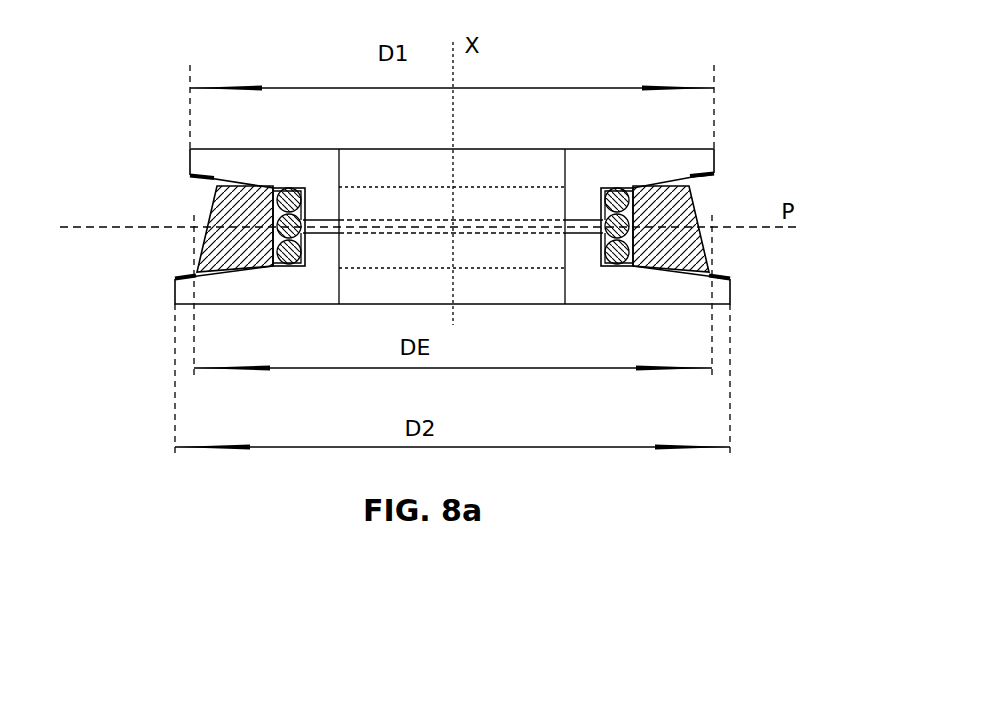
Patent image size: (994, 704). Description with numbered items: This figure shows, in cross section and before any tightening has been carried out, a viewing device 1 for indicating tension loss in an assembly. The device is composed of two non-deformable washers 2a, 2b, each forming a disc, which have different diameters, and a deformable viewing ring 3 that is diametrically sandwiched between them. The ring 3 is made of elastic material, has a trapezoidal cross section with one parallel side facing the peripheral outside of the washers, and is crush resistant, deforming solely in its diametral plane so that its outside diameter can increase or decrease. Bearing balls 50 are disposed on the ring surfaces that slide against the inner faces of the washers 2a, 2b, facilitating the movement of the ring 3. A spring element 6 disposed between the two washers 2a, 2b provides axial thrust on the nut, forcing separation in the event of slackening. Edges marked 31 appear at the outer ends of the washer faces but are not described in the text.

The viewing device 1 is at (842, 96).
The non-deformable washer 2a is at (186, 167).
The non-deformable washer 2b is at (171, 309).
The deformable viewing ring 3 is at (196, 243).
The spring element 6 is at (291, 188).
The sealing lip contact edge 31 is at (712, 177).
The bearing balls 50 is at (236, 186).